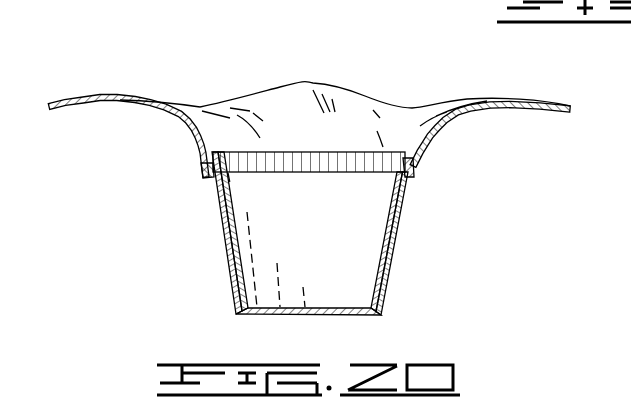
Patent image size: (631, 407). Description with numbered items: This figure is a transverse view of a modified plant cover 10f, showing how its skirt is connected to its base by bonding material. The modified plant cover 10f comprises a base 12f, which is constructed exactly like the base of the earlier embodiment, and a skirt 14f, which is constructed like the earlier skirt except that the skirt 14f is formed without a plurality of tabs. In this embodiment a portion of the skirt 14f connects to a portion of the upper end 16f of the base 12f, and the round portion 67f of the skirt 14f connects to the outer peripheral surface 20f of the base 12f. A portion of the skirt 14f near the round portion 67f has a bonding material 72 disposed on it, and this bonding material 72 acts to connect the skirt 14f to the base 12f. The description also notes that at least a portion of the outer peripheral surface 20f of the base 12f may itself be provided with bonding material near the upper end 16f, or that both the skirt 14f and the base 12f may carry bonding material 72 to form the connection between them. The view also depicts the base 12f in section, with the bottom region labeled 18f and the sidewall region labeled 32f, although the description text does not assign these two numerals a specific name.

The modified plant cover 10f is at (258, 55).
The base 12f is at (225, 252).
The skirt 14f is at (198, 107).
The upper end 16f is at (343, 153).
The bottom wall 18f is at (378, 315).
The outer peripheral surface 20f is at (390, 260).
The inner wall layer 32f is at (388, 218).
The round portion 67f is at (208, 177).
The bonding material 72 is at (413, 171).